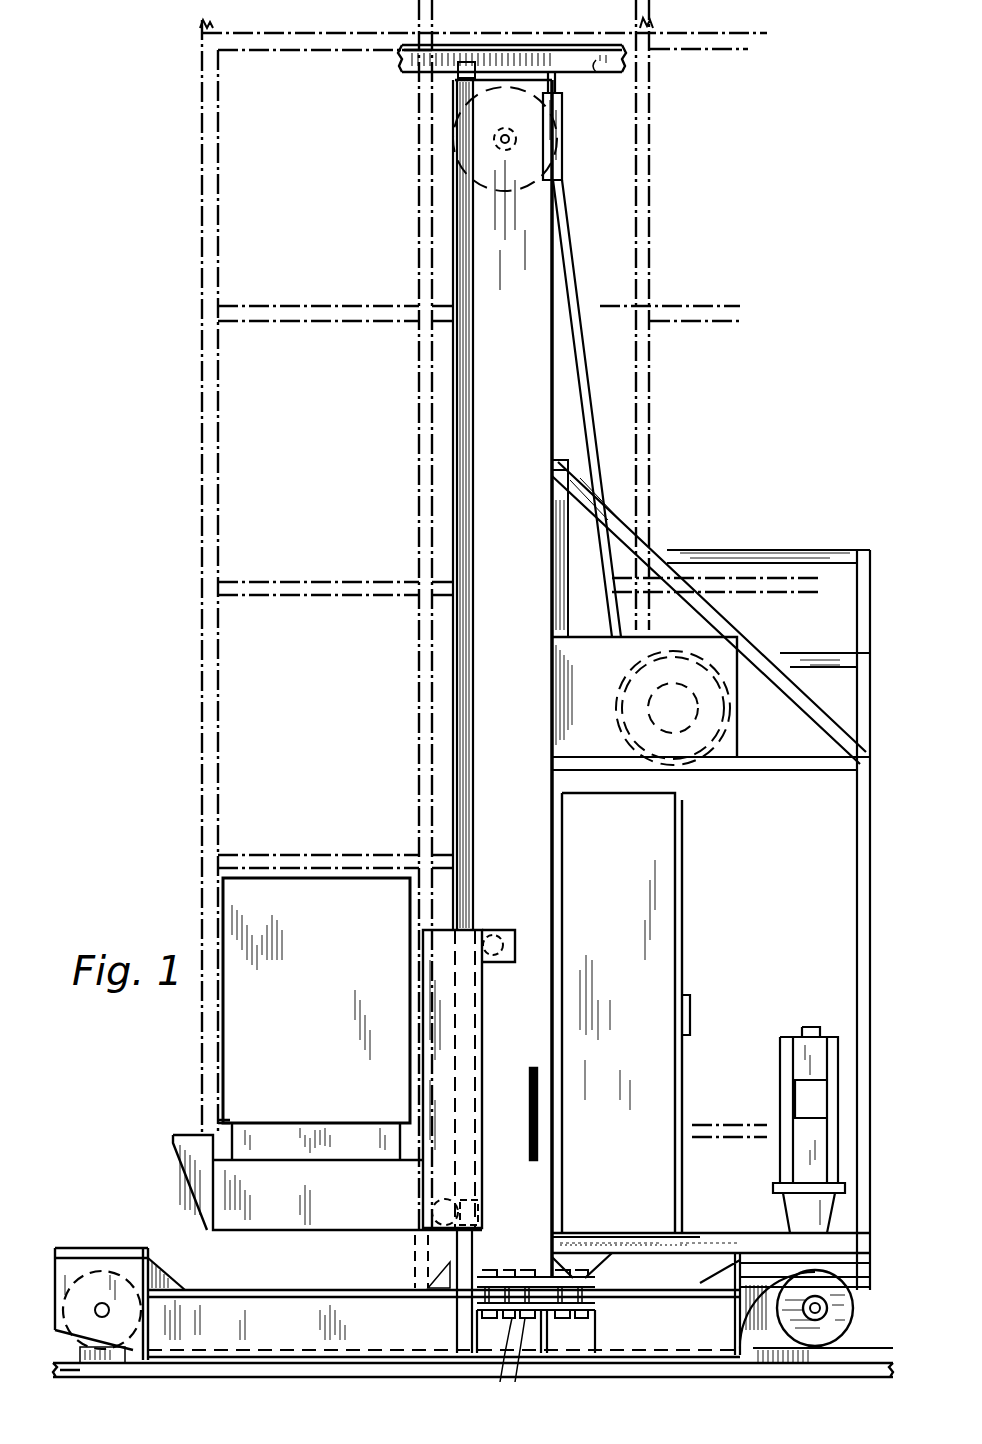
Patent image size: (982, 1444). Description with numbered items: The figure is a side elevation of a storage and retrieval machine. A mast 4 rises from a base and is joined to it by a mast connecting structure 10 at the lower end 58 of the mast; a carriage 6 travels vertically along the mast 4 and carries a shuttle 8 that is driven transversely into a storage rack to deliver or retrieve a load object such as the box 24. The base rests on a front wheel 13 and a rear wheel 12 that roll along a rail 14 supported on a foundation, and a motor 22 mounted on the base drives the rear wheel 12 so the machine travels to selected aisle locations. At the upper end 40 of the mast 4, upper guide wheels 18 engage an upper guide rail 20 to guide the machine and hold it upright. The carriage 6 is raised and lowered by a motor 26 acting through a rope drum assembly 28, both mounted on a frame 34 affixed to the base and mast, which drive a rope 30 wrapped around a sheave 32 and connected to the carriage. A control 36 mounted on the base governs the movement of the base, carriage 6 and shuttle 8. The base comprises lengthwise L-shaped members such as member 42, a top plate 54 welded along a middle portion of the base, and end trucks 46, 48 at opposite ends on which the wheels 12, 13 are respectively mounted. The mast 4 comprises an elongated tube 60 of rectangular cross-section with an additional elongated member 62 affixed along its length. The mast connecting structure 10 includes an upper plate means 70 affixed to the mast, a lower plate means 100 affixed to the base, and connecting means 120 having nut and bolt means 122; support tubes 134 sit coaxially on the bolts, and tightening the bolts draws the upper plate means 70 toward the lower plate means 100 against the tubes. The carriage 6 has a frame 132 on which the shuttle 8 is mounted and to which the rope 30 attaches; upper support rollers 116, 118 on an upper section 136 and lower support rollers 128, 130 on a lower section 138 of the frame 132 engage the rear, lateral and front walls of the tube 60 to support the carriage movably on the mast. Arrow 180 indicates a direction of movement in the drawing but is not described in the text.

The mast 4 is at (508, 322).
The carriage 6 is at (310, 1204).
The shuttle 8 is at (295, 1154).
The mast connecting structure 10 is at (723, 1322).
The rear wheel 12 is at (837, 1322).
The front wheel 13 is at (93, 1350).
The rail 14 is at (870, 1365).
The upper guide wheels 18 is at (470, 62).
The upper guide rail 20 is at (600, 72).
The motor 22 is at (788, 1057).
The box 24 is at (230, 885).
The motor 26 is at (690, 718).
The rope drum assembly 28 is at (714, 646).
The rope 30 is at (453, 362).
The sheave 32 is at (548, 121).
The frame 34 is at (826, 762).
The control 36 is at (642, 828).
The upper end 40 is at (527, 212).
The L-shaped member 42 is at (283, 1313).
The end truck 46 is at (860, 1270).
The end truck 48 is at (132, 1263).
The top plate 54 is at (247, 1289).
The lower end 58 is at (535, 1222).
The elongated tube 60 is at (487, 431).
The elongated member 62 is at (564, 302).
The upper plate means 70 is at (539, 1258).
The lower plate means 100 is at (558, 1324).
The upper support roller 116 is at (492, 963).
The upper support roller 118 is at (473, 935).
The connecting means 120 is at (612, 1281).
The nut and bolt means 122 is at (592, 1265).
The lower support roller 128 is at (470, 1215).
The lower support roller 130 is at (432, 1205).
The frame 132 is at (327, 1246).
The support tubes 134 is at (478, 1306).
The upper section 136 is at (440, 958).
The lower section 138 is at (470, 1162).
The load direction 180 is at (328, 1110).